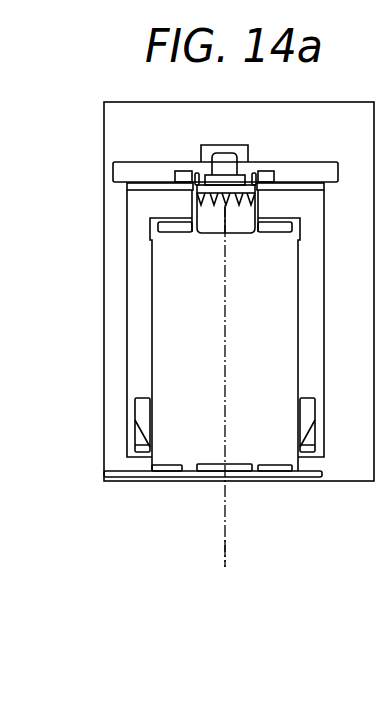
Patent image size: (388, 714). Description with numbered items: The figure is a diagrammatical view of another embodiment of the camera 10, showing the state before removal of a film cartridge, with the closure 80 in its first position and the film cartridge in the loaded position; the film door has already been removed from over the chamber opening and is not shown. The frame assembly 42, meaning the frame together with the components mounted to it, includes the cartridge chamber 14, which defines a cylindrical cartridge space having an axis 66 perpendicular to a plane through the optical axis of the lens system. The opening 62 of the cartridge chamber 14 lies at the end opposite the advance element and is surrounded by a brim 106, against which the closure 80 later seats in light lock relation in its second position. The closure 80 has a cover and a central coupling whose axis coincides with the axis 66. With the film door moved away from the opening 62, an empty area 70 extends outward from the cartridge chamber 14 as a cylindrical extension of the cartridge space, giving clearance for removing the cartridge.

The camera 10 is at (88, 207).
The frame assembly 42 is at (118, 101).
The cartridge chamber 14 is at (127, 305).
The closure 80 is at (178, 230).
The brim 106 is at (158, 462).
The opening 62 is at (186, 491).
The axis 66 is at (226, 493).
The empty area 70 is at (233, 543).